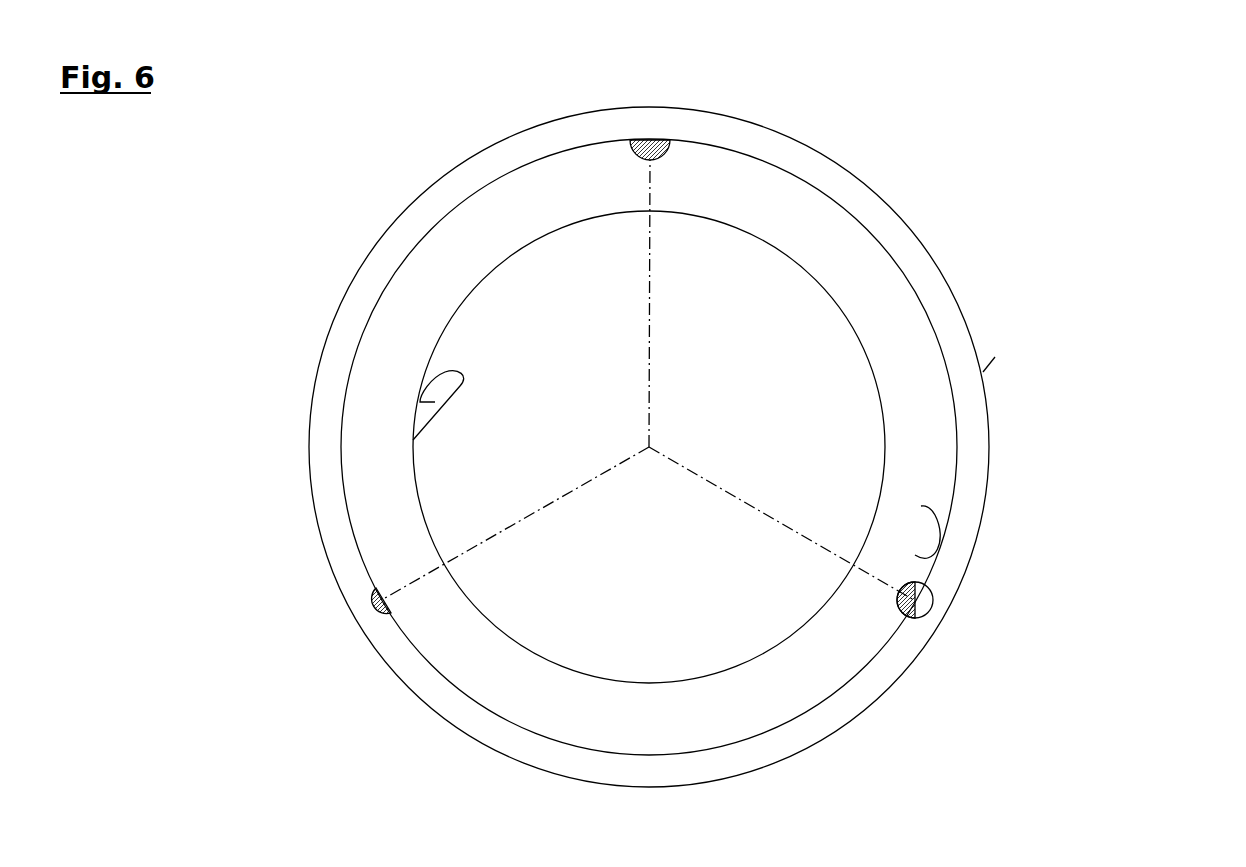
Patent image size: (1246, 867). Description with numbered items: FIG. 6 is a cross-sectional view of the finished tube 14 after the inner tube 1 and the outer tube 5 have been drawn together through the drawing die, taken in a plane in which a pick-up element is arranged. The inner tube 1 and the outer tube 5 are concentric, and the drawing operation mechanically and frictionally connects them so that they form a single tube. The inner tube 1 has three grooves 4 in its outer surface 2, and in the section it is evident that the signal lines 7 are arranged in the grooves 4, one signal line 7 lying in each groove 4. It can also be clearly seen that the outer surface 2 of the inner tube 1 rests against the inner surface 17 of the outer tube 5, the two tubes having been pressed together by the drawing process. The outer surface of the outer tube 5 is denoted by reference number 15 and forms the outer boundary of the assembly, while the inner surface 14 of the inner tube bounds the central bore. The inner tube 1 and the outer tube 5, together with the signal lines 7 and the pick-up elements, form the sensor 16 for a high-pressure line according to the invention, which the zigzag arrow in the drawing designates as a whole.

The inner tube 1 is at (877, 310).
The outer surface of the inner tube 2 is at (950, 487).
The groove 4 is at (658, 137).
The outer tube 5 is at (853, 200).
The signal line 7 is at (920, 581).
The inner surface of the inner tube 14 is at (413, 440).
The outer surface of the outer tube 15 is at (983, 372).
The sensor 16 is at (1040, 160).
The inner surface of the outer tube 17 is at (915, 555).